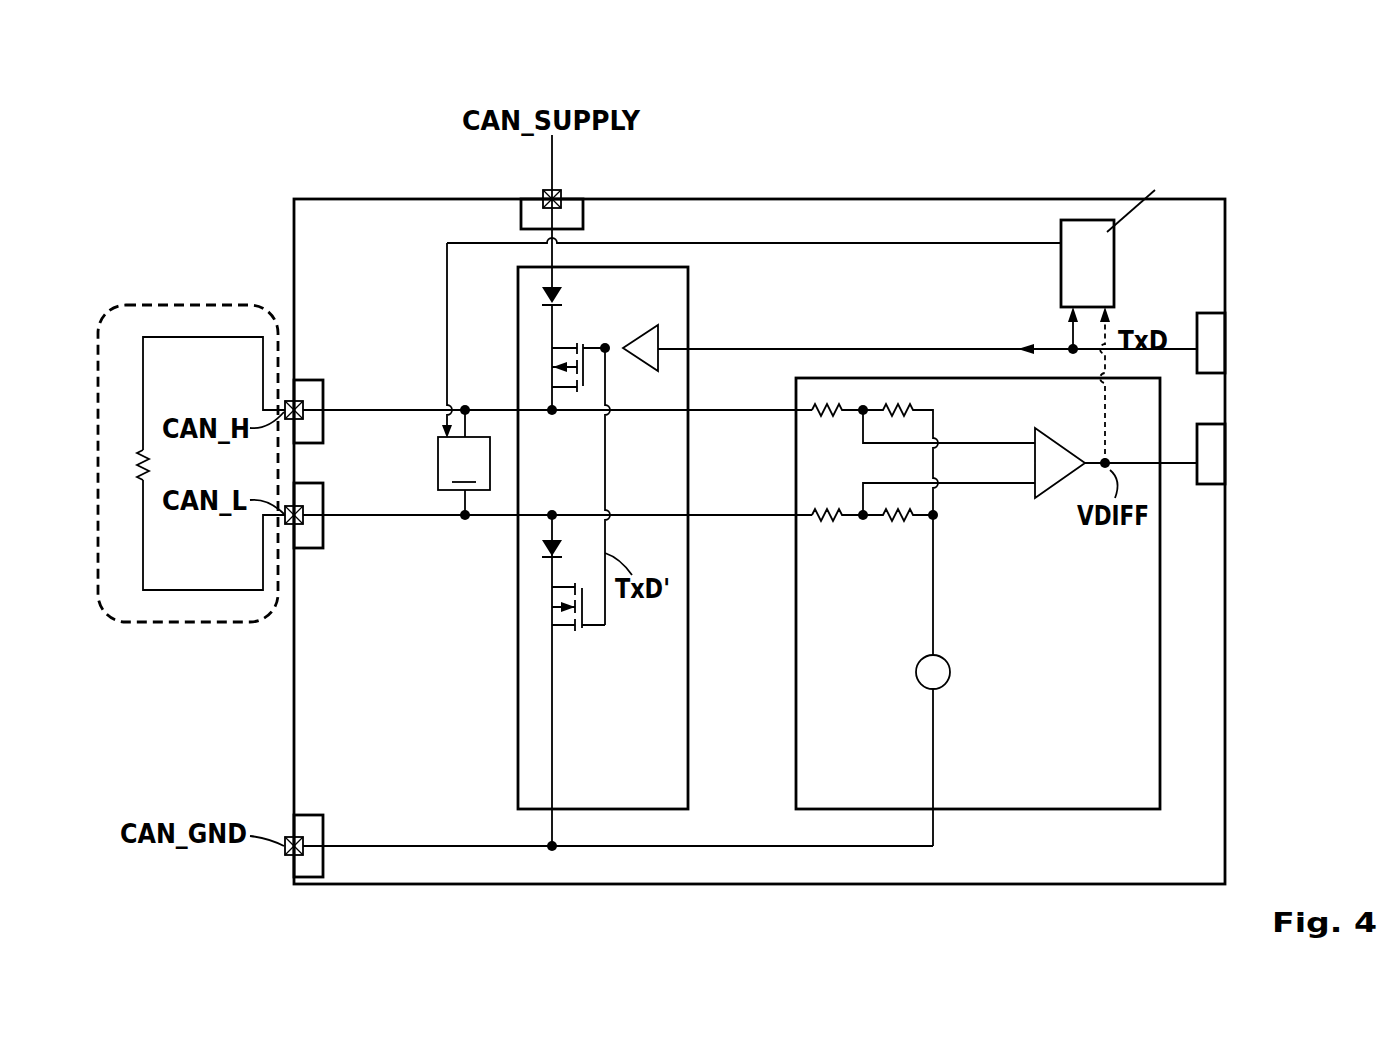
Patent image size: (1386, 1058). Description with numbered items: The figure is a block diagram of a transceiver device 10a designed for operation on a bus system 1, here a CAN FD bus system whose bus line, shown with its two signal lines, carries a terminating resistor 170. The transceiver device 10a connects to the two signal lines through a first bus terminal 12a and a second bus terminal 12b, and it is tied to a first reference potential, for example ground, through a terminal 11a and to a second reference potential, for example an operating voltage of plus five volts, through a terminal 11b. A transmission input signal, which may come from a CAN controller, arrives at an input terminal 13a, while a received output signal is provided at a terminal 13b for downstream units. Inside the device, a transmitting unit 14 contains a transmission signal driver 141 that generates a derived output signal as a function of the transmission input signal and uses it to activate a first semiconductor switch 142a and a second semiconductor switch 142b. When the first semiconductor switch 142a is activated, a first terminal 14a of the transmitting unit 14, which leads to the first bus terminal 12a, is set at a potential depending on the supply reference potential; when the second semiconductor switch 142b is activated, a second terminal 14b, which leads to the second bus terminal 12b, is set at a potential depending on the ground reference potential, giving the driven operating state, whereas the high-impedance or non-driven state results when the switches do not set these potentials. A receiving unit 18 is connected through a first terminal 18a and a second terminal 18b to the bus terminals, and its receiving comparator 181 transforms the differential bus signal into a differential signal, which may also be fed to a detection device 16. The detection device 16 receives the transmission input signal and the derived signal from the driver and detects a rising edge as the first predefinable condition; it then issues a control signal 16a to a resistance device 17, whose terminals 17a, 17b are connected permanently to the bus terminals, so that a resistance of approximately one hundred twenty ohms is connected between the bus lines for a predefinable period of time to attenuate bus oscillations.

The transceiver device 10a is at (210, 128).
The bus system 1 is at (160, 305).
The terminating resistor 170 is at (128, 458).
The first bus terminal 12a is at (310, 380).
The second bus terminal 12b is at (310, 548).
The terminal 11a is at (310, 815).
The terminal 11b is at (584, 215).
The input terminal 13a is at (1197, 325).
The terminal 13b is at (1197, 470).
The detection device 16 is at (1088, 220).
The control signal 16a is at (845, 243).
The resistance device 17 is at (464, 463).
The terminal of resistance device 17a is at (465, 404).
The terminal of resistance device 17b is at (465, 520).
The transmitting unit 14 is at (688, 755).
The first terminal of transmitting unit 14a is at (552, 415).
The second terminal of transmitting unit 14b is at (552, 515).
The transmission signal driver 141 is at (660, 335).
The first semiconductor switch 142a is at (572, 334).
The second semiconductor switch 142b is at (578, 650).
The receiving unit 18 is at (796, 663).
The first terminal of receiving unit 18a is at (863, 404).
The second terminal of receiving unit 18b is at (863, 520).
The receiving comparator 181 is at (1068, 447).